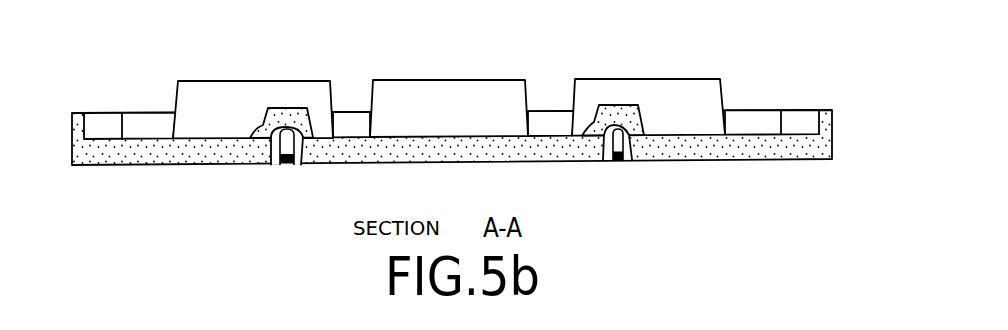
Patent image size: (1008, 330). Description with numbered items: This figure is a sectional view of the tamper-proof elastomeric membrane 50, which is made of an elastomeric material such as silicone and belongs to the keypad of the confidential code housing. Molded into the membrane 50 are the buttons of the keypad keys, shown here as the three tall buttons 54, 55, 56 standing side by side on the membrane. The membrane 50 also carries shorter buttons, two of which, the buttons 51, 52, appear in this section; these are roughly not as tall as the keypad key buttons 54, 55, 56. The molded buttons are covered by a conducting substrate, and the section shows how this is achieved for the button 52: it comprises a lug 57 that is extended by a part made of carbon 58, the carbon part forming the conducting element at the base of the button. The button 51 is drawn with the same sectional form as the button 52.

The membrane 50 is at (117, 153).
The button 51 is at (252, 130).
The button 52 is at (586, 126).
The button 54 is at (258, 95).
The button 55 is at (465, 98).
The button 56 is at (667, 97).
The lug 57 is at (627, 145).
The part made of carbon 58 is at (620, 162).